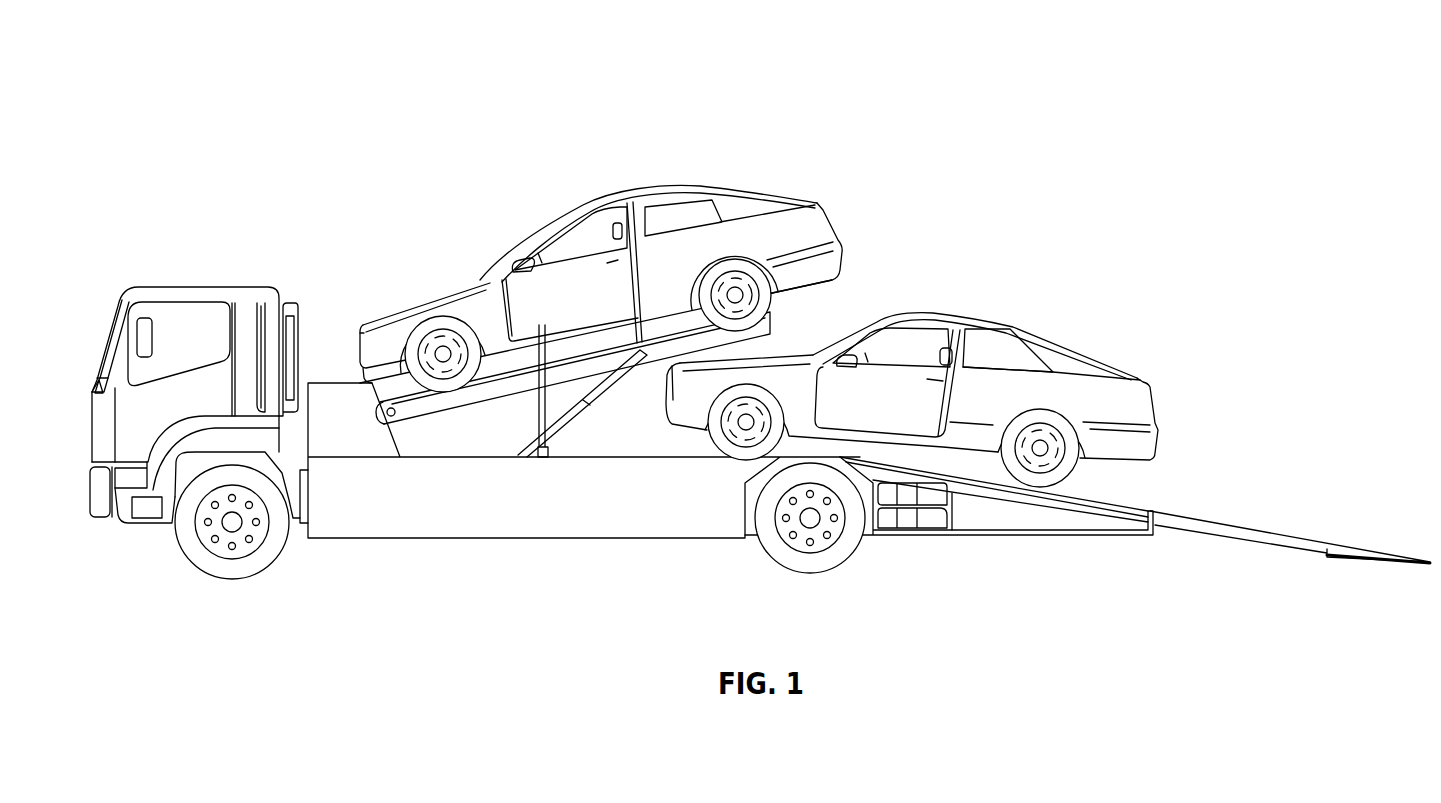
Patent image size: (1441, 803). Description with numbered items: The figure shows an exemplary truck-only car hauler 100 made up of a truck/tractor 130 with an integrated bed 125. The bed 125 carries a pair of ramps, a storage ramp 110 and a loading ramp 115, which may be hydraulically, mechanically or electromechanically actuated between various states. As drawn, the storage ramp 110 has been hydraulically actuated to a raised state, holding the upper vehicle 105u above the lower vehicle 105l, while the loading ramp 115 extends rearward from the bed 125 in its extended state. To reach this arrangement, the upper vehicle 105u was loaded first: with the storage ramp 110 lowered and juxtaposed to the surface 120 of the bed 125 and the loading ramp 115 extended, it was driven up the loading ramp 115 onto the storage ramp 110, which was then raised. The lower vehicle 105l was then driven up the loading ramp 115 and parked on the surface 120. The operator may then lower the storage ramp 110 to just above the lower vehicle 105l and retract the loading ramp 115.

The car hauler 100 is at (202, 78).
The upper vehicle 105u is at (660, 187).
The lower vehicle 105l is at (1005, 318).
The storage ramp 110 is at (757, 330).
The loading ramp 115 is at (1205, 522).
The surface of the bed 120 is at (633, 458).
The bed 125 is at (513, 506).
The truck/tractor 130 is at (199, 286).